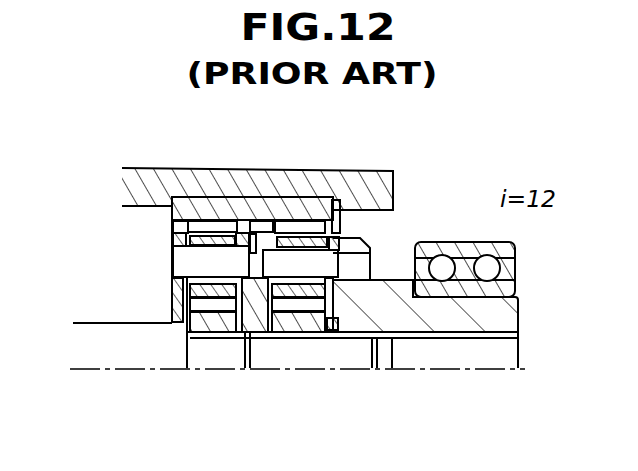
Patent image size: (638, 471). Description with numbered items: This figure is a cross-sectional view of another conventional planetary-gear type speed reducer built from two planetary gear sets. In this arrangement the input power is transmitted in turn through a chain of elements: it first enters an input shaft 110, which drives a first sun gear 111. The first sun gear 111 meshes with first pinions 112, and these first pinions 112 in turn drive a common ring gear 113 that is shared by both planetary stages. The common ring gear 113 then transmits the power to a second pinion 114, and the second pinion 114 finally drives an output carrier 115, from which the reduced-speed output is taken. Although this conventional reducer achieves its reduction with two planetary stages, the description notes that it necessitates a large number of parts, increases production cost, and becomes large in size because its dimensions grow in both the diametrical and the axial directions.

The input shaft 110 is at (95, 350).
The first sun gear 111 is at (205, 326).
The first pinions 112 is at (170, 226).
The common ring gear 113 is at (262, 197).
The second pinion 114 is at (338, 228).
The output carrier 115 is at (500, 318).